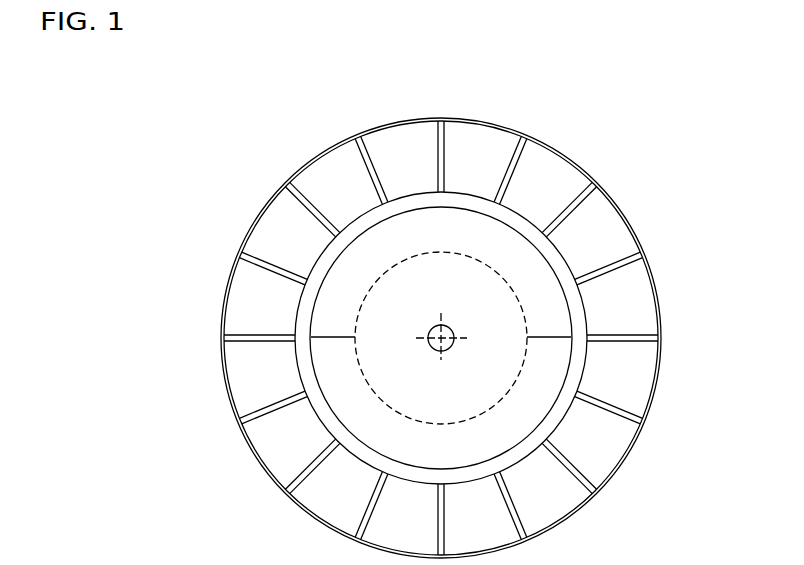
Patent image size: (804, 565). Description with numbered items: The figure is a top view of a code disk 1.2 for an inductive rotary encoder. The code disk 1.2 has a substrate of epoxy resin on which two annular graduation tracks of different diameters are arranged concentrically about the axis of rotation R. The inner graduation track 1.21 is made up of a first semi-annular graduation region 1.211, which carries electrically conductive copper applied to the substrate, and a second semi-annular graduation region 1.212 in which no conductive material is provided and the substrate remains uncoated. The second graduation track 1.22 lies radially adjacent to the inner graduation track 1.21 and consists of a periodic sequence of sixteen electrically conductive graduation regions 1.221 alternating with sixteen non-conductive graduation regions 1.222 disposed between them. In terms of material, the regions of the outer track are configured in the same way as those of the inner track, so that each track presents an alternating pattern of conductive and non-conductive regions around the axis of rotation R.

The code disk 1.2 is at (269, 503).
The inner graduation track 1.21 is at (574, 312).
The first semi-annular graduation region 1.211 is at (500, 240).
The second semi-annular graduation region 1.212 is at (319, 423).
The second graduation track 1.22 is at (607, 223).
The electrically conductive graduation regions 1.221 is at (407, 148).
The non-conductive graduation regions 1.222 is at (360, 132).
The axis of rotation R is at (433, 341).